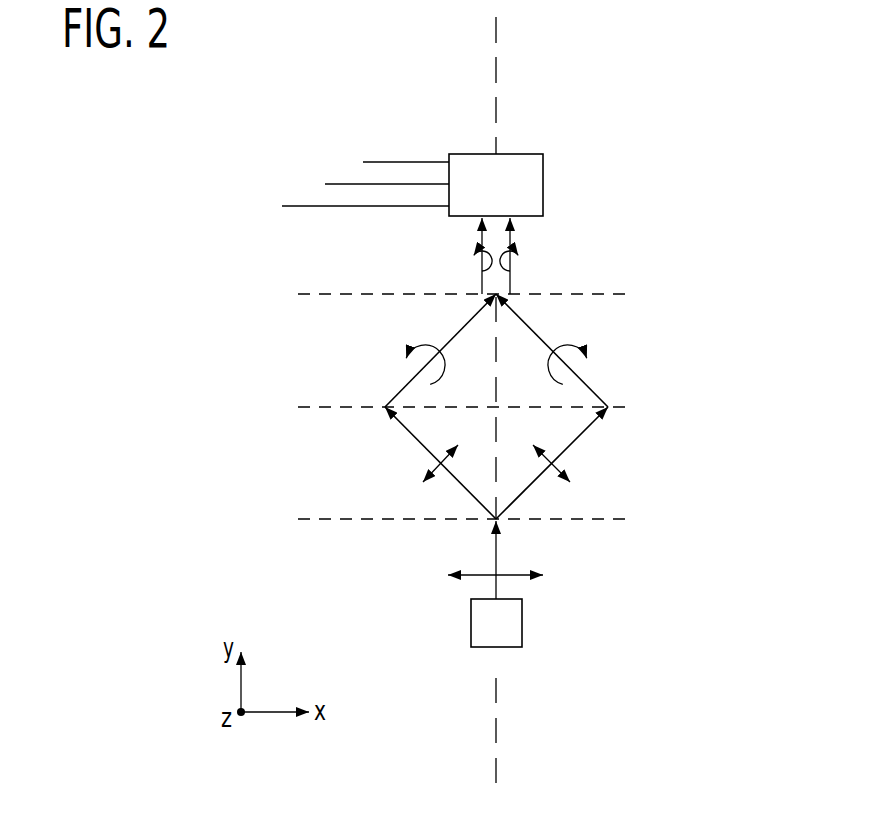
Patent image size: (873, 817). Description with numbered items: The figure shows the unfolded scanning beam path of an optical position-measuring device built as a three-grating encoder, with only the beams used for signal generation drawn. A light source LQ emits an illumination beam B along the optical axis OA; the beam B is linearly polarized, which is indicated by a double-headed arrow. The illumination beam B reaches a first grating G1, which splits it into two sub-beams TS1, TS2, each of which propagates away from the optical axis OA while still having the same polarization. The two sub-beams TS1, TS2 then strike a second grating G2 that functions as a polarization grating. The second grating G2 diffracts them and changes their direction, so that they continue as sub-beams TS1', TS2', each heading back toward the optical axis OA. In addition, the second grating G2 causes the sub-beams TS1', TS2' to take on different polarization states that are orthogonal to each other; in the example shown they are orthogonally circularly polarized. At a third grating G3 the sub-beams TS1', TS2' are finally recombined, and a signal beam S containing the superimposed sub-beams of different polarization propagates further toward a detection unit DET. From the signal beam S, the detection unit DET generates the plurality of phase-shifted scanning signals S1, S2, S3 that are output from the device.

The optical axis OA is at (497, 30).
The detection unit DET is at (533, 186).
The scanning signal S1 is at (393, 160).
The scanning signal S2 is at (373, 182).
The scanning signal S3 is at (351, 207).
The signal beam S is at (534, 257).
The third grating G3 is at (640, 294).
The second grating G2 is at (640, 407).
The first grating G1 is at (640, 519).
The sub-beam TS1' is at (436, 350).
The sub-beam TS2' is at (554, 350).
The sub-beam TS1 is at (417, 463).
The sub-beam TS2 is at (574, 463).
The illumination beam B is at (497, 550).
The light source LQ is at (510, 623).